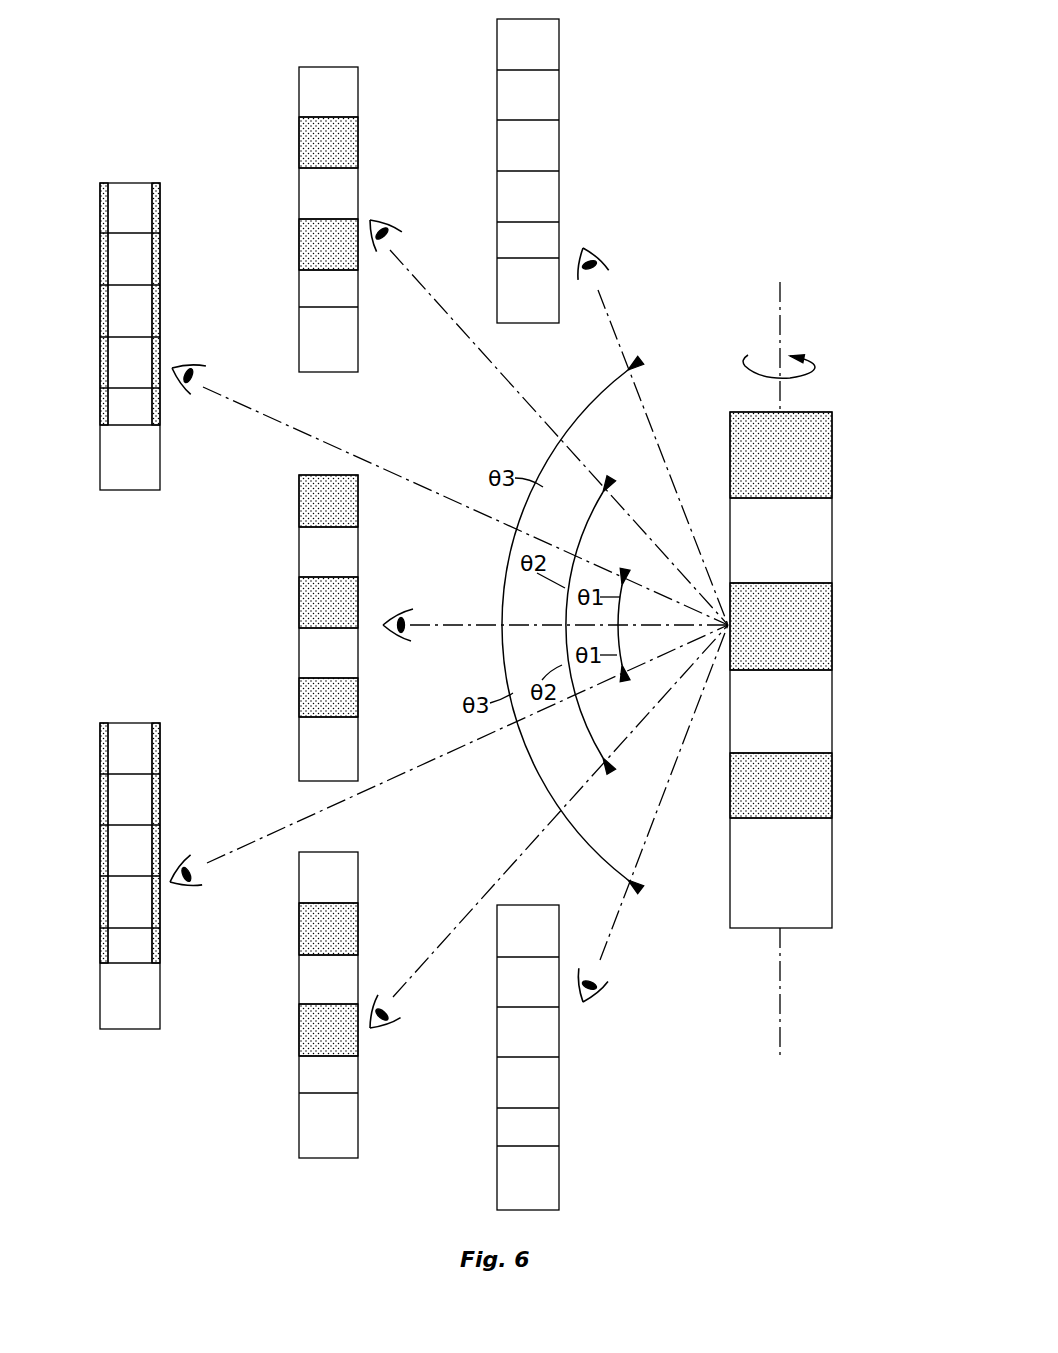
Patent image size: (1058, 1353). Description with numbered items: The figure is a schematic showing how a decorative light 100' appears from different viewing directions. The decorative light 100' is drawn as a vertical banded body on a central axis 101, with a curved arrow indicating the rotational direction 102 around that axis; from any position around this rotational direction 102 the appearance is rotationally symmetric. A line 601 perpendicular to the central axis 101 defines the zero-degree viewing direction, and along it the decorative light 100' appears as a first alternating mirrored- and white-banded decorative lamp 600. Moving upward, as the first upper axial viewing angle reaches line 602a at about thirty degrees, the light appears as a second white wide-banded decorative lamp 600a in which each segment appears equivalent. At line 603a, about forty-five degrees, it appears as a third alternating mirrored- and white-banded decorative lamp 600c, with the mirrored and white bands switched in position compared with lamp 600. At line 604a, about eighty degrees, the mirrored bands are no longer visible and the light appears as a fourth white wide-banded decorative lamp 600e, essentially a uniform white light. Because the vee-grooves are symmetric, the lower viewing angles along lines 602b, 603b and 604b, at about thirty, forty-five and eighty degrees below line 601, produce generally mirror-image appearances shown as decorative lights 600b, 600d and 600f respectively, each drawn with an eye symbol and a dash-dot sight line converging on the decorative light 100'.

The first alternating mirrored- and white-banded decorative lamp 600 is at (296, 492).
The second white wide-banded decorative lamp 600a is at (128, 178).
The decorative light appearance at lower thirty-degree viewing angle 600b is at (127, 700).
The third alternating mirrored- and white-banded decorative lamp 600c is at (283, 60).
The decorative light appearance at lower forty-five-degree viewing angle 600d is at (290, 1130).
The fourth white wide-banded decorative lamp 600e is at (580, 38).
The decorative light appearance at lower eighty-degree viewing angle 600f is at (575, 1192).
The line perpendicular to the central axis 601 is at (487, 622).
The line at first upper axial viewing angle 602a is at (410, 478).
The line at first lower axial viewing angle 602b is at (420, 765).
The line at second upper axial viewing angle 603a is at (513, 380).
The line at second lower axial viewing angle 603b is at (525, 855).
The line at third upper axial viewing angle 604a is at (617, 333).
The line at third lower axial viewing angle 604b is at (615, 922).
The decorative light 100' is at (815, 644).
The central axis 101 is at (781, 300).
The rotational direction 102 is at (743, 367).